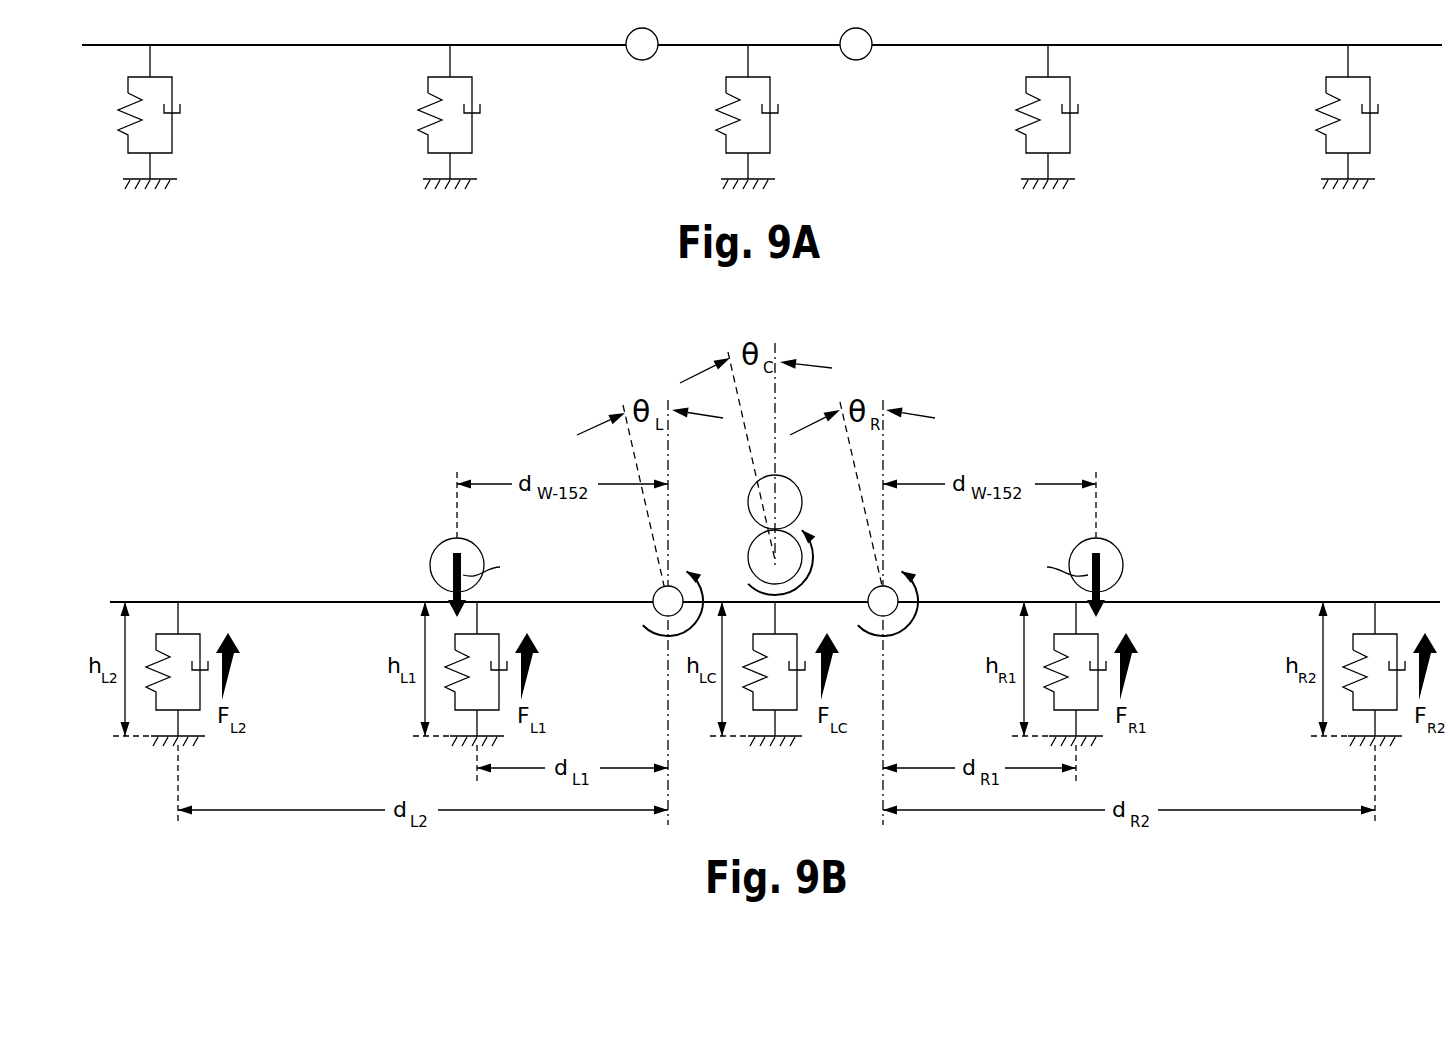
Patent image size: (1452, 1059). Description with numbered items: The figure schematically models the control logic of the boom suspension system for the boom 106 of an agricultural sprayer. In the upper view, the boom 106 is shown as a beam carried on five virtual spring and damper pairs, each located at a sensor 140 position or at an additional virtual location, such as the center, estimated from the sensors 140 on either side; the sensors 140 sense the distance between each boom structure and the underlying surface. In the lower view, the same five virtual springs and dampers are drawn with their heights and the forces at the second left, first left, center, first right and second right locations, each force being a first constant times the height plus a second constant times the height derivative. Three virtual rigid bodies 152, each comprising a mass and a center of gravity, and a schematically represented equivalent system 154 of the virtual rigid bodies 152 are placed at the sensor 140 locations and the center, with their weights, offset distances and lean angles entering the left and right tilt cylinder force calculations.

In FIG. 9A, the boom 106 is at (249, 171).
In FIG. 9B, the boom 106 is at (329, 853).
In FIG. 9A, the sensor 140 is at (641, 61).
In FIG. 9B, the sensor 140 is at (661, 617).
In FIG. 9B, the virtual rigid body 152 is at (433, 552).
In FIG. 9B, the equivalent system 154 is at (748, 552).